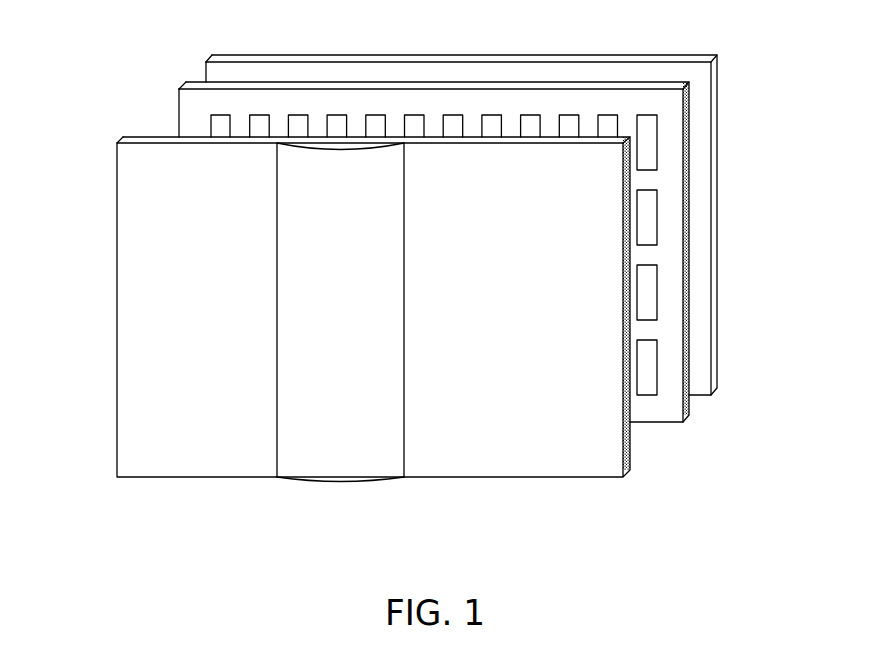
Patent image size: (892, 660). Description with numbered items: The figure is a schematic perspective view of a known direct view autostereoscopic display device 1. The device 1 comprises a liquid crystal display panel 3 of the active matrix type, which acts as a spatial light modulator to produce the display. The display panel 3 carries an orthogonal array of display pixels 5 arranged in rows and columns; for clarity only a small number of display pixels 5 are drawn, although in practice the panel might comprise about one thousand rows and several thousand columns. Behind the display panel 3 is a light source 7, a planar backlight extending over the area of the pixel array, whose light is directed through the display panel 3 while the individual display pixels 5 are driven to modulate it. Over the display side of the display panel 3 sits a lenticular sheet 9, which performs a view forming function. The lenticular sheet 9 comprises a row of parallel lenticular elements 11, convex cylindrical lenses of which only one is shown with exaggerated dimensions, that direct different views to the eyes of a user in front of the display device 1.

The autostereoscopic display device 1 is at (128, 86).
The liquid crystal display panel 3 is at (690, 416).
The display pixels 5 is at (646, 135).
The light source 7 is at (717, 377).
The lenticular sheet 9 is at (630, 470).
The lenticular elements 11 is at (340, 471).